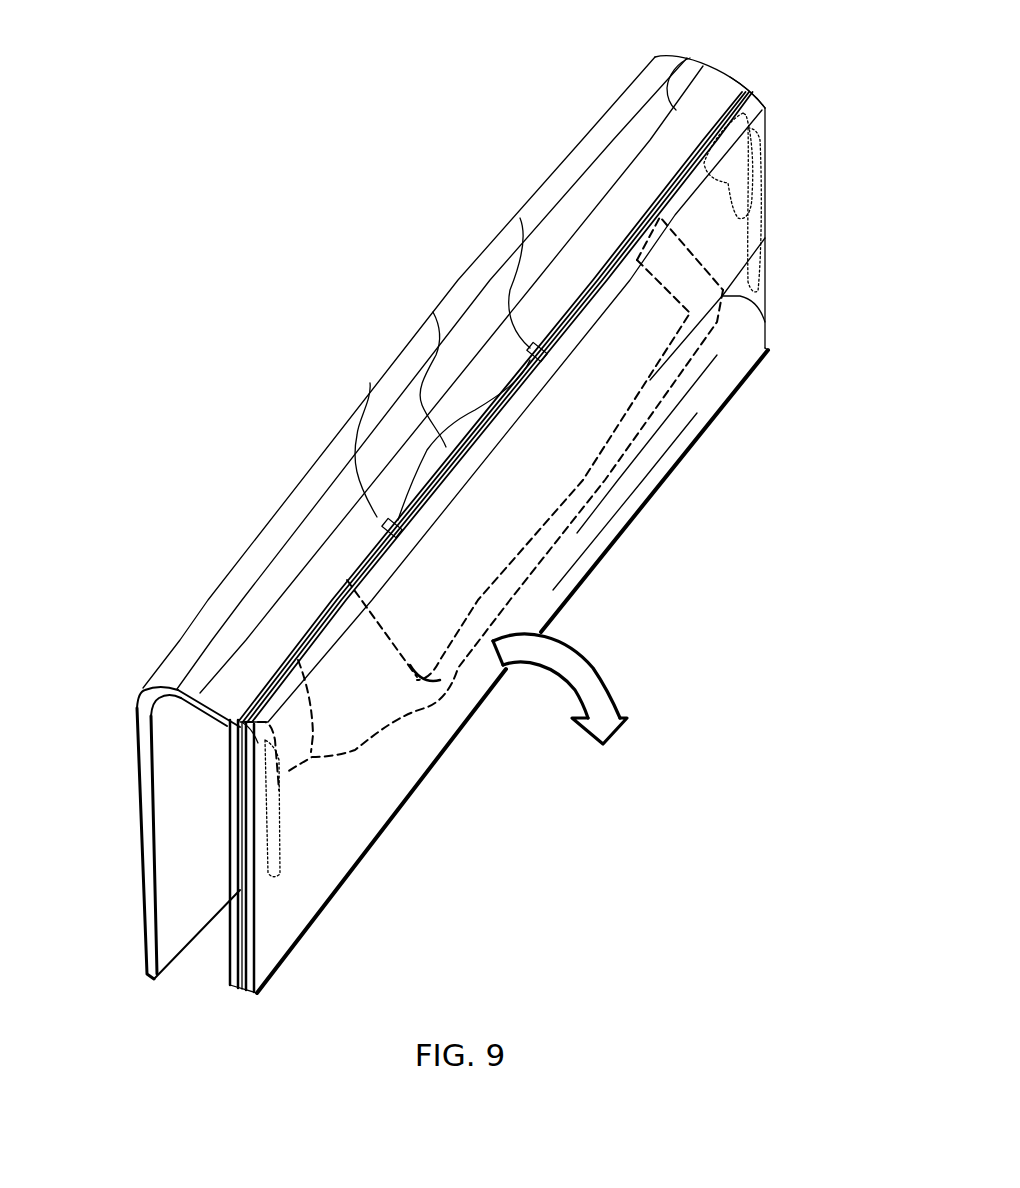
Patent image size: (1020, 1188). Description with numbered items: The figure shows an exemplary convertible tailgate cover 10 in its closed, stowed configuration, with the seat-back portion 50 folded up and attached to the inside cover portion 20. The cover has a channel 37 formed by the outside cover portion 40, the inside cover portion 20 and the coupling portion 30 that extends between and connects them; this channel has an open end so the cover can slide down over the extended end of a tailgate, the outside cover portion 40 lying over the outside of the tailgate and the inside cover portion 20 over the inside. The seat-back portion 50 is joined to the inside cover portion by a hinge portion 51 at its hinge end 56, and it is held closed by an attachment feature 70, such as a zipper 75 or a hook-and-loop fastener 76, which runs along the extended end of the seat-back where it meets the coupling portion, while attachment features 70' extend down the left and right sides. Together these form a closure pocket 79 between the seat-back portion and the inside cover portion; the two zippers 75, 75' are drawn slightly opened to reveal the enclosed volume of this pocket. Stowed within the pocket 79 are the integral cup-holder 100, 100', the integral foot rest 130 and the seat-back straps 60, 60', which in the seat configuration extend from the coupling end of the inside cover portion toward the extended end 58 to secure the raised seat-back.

The convertible tailgate cover 10 is at (346, 212).
The inside cover portion 20 is at (237, 943).
The coupling portion 30 is at (701, 56).
The channel 37 is at (170, 816).
The outside cover portion 40 is at (167, 753).
The seat-back portion 50 is at (447, 543).
The hinge portion 51 is at (247, 994).
The hinge end 56 is at (617, 545).
The extended end 58 is at (765, 104).
The seat-back strap 60 is at (310, 808).
The seat-back strap 60' is at (805, 210).
The attachment feature 70 is at (477, 407).
The attachment feature 70' is at (168, 934).
The zipper 75 is at (348, 442).
The zipper 75' is at (472, 352).
The hook-and-loop fastener 76 is at (243, 893).
The pocket 79 is at (433, 312).
The integral cup-holder 100 is at (326, 756).
The pocket (opposite end) 100' is at (788, 166).
The integral foot rest 130 is at (765, 322).